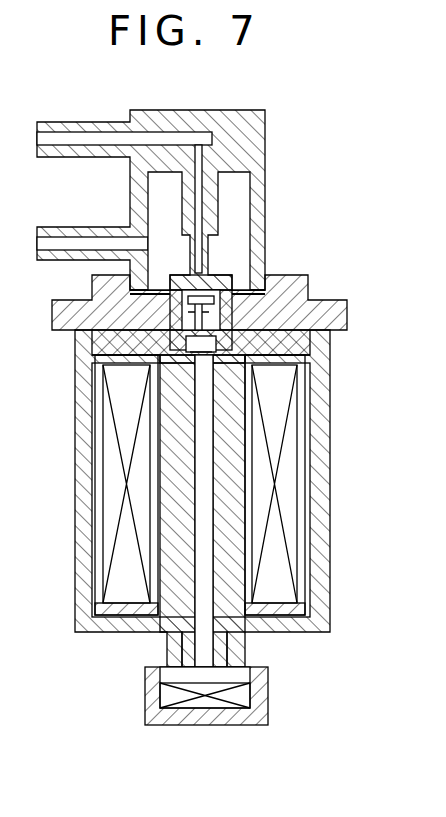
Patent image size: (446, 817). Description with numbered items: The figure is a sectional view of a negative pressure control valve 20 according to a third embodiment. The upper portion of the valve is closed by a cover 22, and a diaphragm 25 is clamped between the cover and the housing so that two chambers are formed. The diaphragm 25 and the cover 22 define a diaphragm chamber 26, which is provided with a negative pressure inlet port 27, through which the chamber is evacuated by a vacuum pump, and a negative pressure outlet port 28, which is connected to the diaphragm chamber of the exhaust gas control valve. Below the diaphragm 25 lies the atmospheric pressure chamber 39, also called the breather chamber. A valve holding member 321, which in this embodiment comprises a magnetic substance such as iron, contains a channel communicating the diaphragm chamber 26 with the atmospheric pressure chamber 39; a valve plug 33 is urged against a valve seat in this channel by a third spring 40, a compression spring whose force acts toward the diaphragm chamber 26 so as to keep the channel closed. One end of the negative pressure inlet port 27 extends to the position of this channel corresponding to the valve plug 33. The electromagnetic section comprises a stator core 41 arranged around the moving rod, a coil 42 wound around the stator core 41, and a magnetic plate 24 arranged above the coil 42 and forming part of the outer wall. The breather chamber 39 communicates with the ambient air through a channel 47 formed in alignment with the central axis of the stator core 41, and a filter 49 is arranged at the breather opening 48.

The negative pressure control valve 20 is at (298, 222).
The cover 22 is at (170, 183).
The magnetic plate 24 is at (305, 285).
The diaphragm 25 is at (270, 278).
The diaphragm chamber 26 is at (230, 195).
The negative pressure inlet port 27 is at (70, 122).
The negative pressure outlet port 28 is at (40, 226).
The valve holding member 321 is at (147, 215).
The valve plug 33 is at (220, 276).
The atmospheric pressure chamber 39 is at (270, 327).
The third spring 40 is at (182, 333).
The stator core 41 is at (240, 570).
The coil 42 is at (296, 466).
The channel 47 is at (178, 573).
The breather opening 48 is at (206, 723).
The filter 49 is at (157, 724).